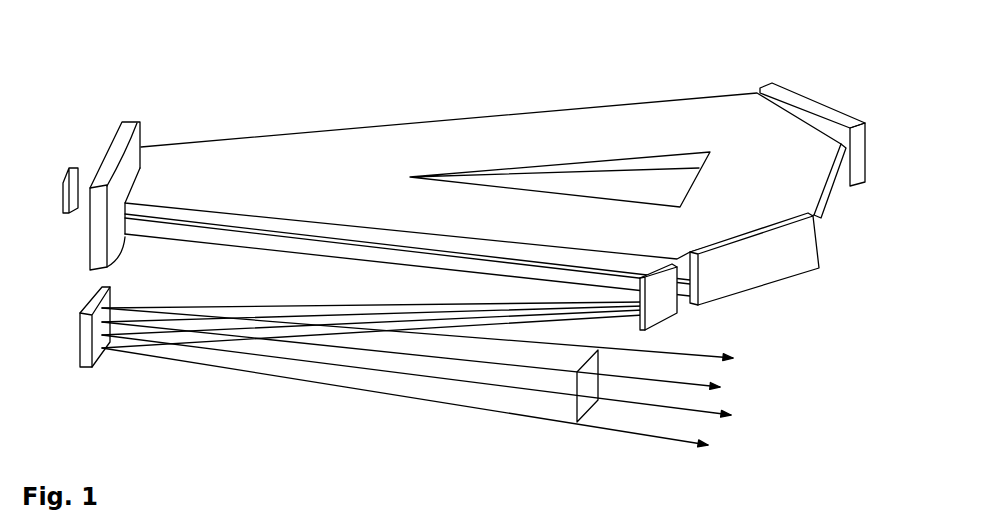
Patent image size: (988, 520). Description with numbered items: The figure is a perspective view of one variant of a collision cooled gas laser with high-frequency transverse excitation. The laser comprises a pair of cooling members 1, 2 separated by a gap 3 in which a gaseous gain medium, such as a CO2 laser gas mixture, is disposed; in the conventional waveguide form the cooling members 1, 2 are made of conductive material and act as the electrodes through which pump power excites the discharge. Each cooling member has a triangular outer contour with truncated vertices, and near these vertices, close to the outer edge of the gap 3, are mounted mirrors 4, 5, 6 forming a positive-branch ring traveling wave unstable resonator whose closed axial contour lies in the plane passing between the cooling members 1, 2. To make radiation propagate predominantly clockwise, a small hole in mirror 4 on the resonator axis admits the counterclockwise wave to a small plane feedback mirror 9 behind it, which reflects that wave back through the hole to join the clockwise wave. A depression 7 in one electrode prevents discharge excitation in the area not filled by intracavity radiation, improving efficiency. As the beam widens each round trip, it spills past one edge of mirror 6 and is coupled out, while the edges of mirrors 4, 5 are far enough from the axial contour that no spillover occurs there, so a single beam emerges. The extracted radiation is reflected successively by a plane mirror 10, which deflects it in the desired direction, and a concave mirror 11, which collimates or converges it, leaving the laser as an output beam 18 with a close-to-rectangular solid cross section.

The cooling member 1 is at (820, 217).
The cooling member 2 is at (697, 112).
The gap 3 is at (840, 193).
The mirror 4 is at (123, 143).
The mirror 5 is at (810, 107).
The mirror 6 is at (763, 275).
The depression 7 is at (633, 192).
The feedback mirror 9 is at (72, 175).
The plane mirror 10 is at (663, 315).
The concave mirror 11 is at (103, 352).
The output beam 18 is at (583, 402).